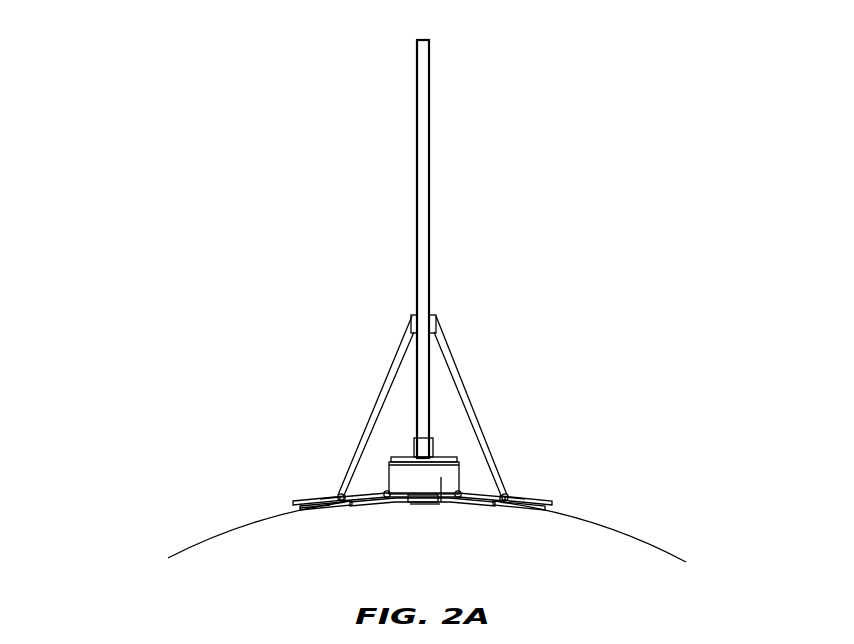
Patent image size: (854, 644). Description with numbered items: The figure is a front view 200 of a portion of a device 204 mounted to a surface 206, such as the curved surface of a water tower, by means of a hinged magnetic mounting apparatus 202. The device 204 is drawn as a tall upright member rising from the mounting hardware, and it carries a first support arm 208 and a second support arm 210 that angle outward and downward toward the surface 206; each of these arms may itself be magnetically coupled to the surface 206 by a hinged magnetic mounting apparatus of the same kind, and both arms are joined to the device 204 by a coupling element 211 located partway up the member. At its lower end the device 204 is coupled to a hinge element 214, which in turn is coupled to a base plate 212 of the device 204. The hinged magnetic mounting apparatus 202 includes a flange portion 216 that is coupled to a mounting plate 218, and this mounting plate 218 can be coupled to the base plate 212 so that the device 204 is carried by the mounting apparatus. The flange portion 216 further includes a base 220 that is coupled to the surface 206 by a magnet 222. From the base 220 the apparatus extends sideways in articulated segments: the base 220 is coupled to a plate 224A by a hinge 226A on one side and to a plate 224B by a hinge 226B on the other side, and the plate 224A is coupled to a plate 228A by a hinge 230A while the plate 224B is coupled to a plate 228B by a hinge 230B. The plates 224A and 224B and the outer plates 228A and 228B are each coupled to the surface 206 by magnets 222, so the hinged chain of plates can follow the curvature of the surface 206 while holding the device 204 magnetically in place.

The front view 200 is at (146, 43).
The hinged magnetic mounting apparatus 202 is at (306, 430).
The device 204 is at (416, 248).
The surface 206 is at (638, 529).
The first support arm 208 is at (382, 388).
The second support arm 210 is at (462, 390).
The coupling element 211 is at (436, 317).
The base plate 212 is at (450, 458).
The hinge element 214 is at (433, 443).
The flange portion 216 is at (441, 502).
The mounting plate 218 is at (389, 462).
The base 220 is at (405, 502).
The magnet 222 is at (317, 512).
The plate 224A is at (342, 500).
The plate 224B is at (504, 500).
The hinge 226A is at (385, 492).
The hinge 226B is at (460, 492).
The plate 228A is at (295, 503).
The plate 228B is at (553, 503).
The hinge 230A is at (336, 496).
The hinge 230B is at (510, 496).